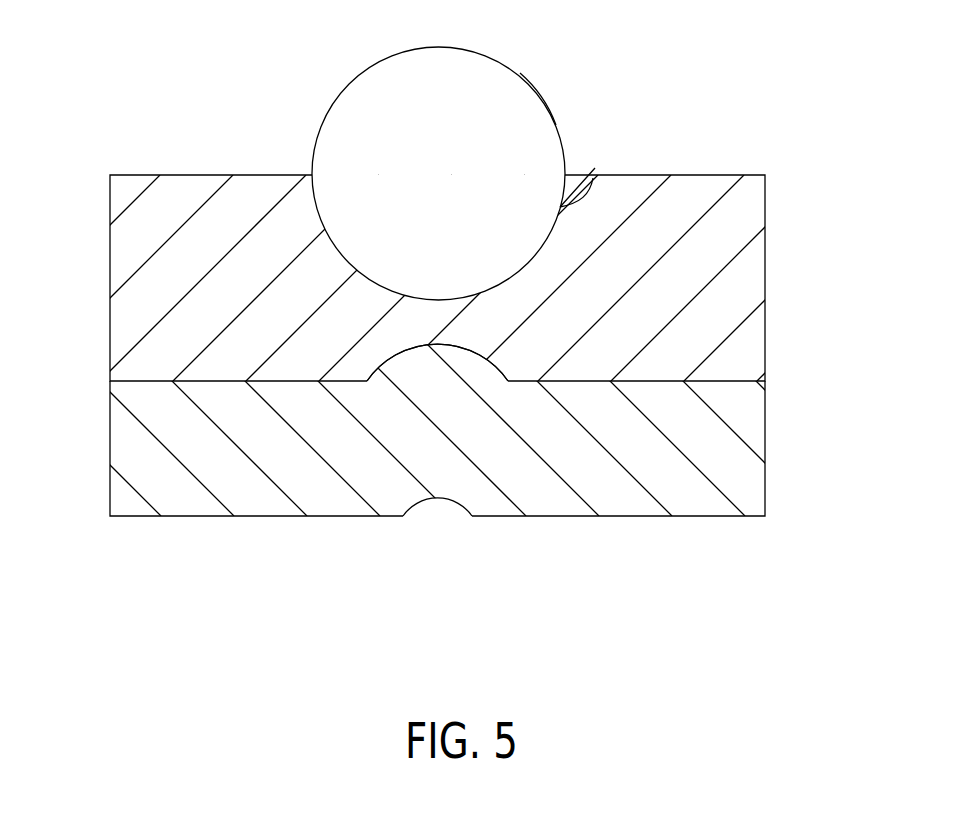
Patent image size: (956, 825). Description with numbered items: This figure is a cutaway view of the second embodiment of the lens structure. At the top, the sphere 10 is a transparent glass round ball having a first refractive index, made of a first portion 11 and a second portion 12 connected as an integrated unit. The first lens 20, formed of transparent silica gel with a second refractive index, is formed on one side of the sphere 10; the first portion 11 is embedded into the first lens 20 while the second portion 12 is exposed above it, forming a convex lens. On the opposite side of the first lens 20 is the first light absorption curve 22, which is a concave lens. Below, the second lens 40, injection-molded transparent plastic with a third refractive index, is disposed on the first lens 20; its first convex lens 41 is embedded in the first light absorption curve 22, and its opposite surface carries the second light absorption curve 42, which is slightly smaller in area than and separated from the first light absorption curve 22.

The sphere 10 is at (337, 138).
The first portion 11 is at (595, 168).
The second portion 12 is at (542, 100).
The first lens 20 is at (748, 212).
The first light absorption curve 22 is at (382, 365).
The second lens 40 is at (172, 505).
The first convex lens 41 is at (400, 366).
The second light absorption curve 42 is at (438, 498).